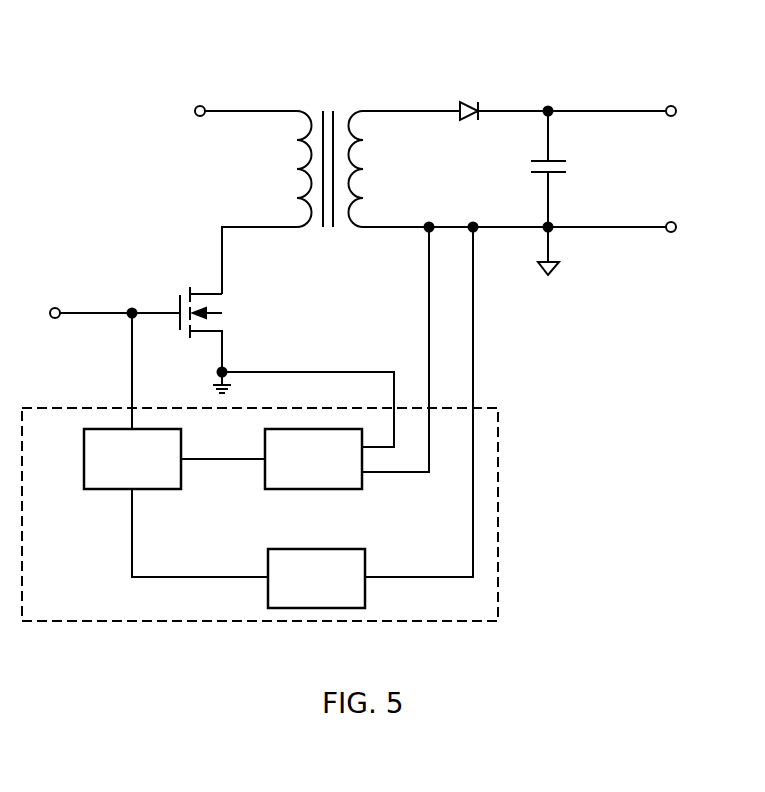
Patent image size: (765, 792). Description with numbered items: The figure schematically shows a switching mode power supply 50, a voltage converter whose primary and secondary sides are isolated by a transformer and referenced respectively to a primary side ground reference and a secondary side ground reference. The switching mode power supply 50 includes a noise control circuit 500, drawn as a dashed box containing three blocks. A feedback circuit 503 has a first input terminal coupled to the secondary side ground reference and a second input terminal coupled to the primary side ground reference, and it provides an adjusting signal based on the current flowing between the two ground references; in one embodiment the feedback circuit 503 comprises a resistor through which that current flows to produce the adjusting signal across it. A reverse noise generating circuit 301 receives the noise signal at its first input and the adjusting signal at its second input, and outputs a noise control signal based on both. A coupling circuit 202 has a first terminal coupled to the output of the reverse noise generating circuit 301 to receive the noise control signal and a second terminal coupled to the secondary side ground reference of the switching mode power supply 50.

The switching mode power supply 50 is at (651, 47).
The noise control circuit 500 is at (60, 440).
The reverse noise generating circuit 301 is at (132, 459).
The feedback circuit 503 is at (313, 459).
The coupling circuit 202 is at (316, 578).